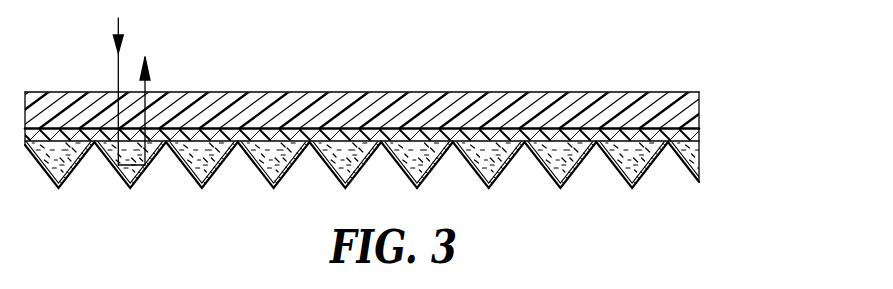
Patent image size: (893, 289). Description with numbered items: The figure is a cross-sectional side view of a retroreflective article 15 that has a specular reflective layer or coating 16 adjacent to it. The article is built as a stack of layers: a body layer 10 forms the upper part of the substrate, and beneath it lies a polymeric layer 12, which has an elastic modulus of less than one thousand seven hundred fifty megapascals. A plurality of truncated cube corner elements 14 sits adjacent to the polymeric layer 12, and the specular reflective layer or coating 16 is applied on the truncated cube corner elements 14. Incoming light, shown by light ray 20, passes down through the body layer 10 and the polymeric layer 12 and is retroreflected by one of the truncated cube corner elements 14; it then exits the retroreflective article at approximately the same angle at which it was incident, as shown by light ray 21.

The body layer 10 is at (700, 104).
The polymeric layer 12 is at (700, 134).
The truncated cube corner elements 14 is at (700, 152).
The retroreflective article 15 is at (613, 52).
The specular reflective layer or coating 16 is at (700, 181).
The light ray 20 is at (117, 70).
The light ray 21 is at (148, 85).